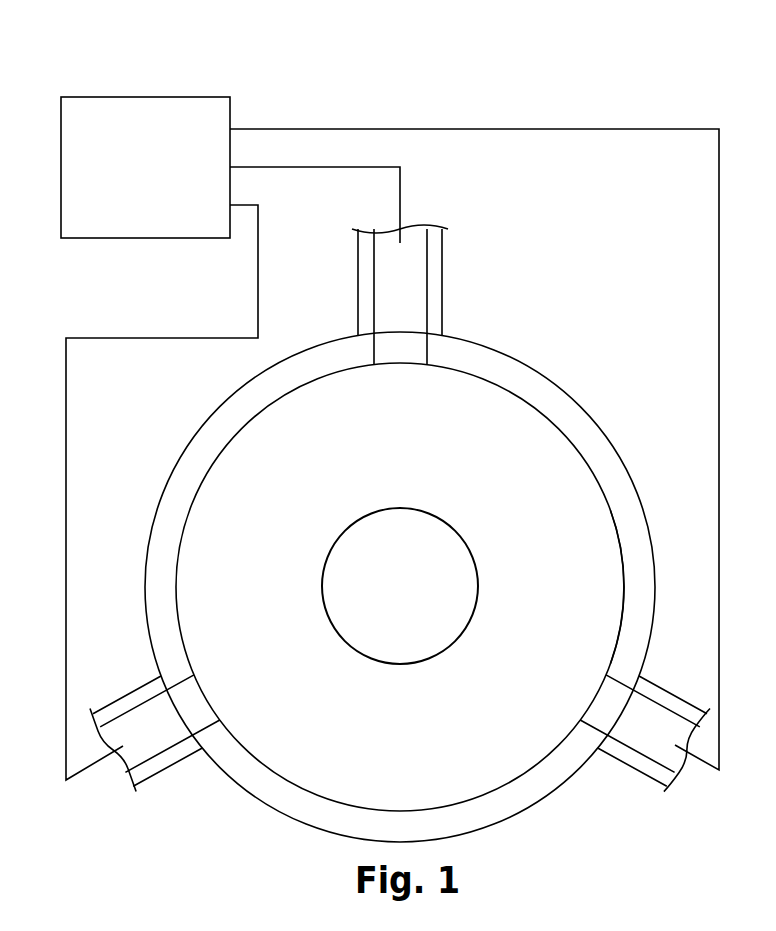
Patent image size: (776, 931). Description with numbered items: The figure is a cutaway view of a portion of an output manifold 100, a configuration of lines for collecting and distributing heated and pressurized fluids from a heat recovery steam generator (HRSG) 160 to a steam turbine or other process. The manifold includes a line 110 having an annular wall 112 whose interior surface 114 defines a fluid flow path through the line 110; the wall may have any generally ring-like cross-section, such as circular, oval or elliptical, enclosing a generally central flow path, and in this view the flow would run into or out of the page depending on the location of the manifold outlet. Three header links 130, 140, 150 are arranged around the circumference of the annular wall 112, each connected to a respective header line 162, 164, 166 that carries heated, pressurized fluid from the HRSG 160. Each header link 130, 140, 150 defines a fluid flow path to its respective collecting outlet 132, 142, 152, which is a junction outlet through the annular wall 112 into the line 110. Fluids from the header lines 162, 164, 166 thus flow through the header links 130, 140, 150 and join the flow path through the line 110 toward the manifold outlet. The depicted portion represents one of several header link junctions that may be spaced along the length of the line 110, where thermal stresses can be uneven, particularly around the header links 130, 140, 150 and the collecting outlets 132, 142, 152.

The output manifold 100 is at (632, 240).
The line 110 is at (582, 403).
The annular wall 112 is at (617, 492).
The interior surface 114 is at (623, 558).
The header link 130 is at (442, 277).
The collecting outlet 132 is at (402, 353).
The header link 140 is at (632, 768).
The collecting outlet 142 is at (605, 710).
The header link 150 is at (155, 777).
The collecting outlet 152 is at (197, 700).
The heat recovery steam generator (HRSG) 160 is at (128, 97).
The header line 162 is at (344, 168).
The header line 164 is at (486, 130).
The header line 166 is at (260, 255).